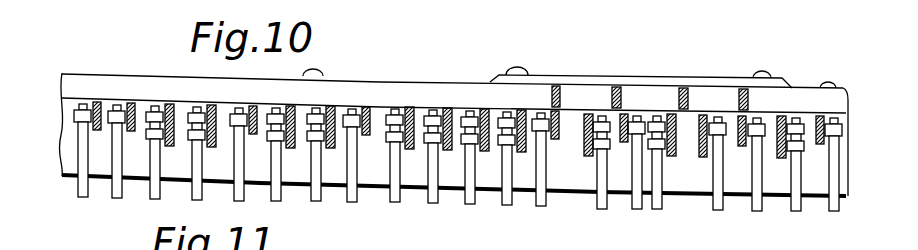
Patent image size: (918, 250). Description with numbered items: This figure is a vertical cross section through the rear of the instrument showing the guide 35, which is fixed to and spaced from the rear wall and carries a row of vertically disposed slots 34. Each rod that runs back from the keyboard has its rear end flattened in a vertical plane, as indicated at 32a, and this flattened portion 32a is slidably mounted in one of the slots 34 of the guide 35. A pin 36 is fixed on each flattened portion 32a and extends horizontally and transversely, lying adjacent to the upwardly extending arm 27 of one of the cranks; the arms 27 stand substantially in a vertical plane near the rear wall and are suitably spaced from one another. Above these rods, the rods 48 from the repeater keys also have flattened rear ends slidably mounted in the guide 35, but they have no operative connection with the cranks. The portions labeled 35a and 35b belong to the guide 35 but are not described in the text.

The arm 27 is at (119, 219).
The flattened portion 32a is at (305, 218).
The slot 34 is at (170, 104).
The guide 35 is at (382, 112).
The bar portion 35a is at (446, 95).
The raised strip 35b is at (645, 82).
The pin 36 is at (182, 165).
The rod 48 is at (742, 96).